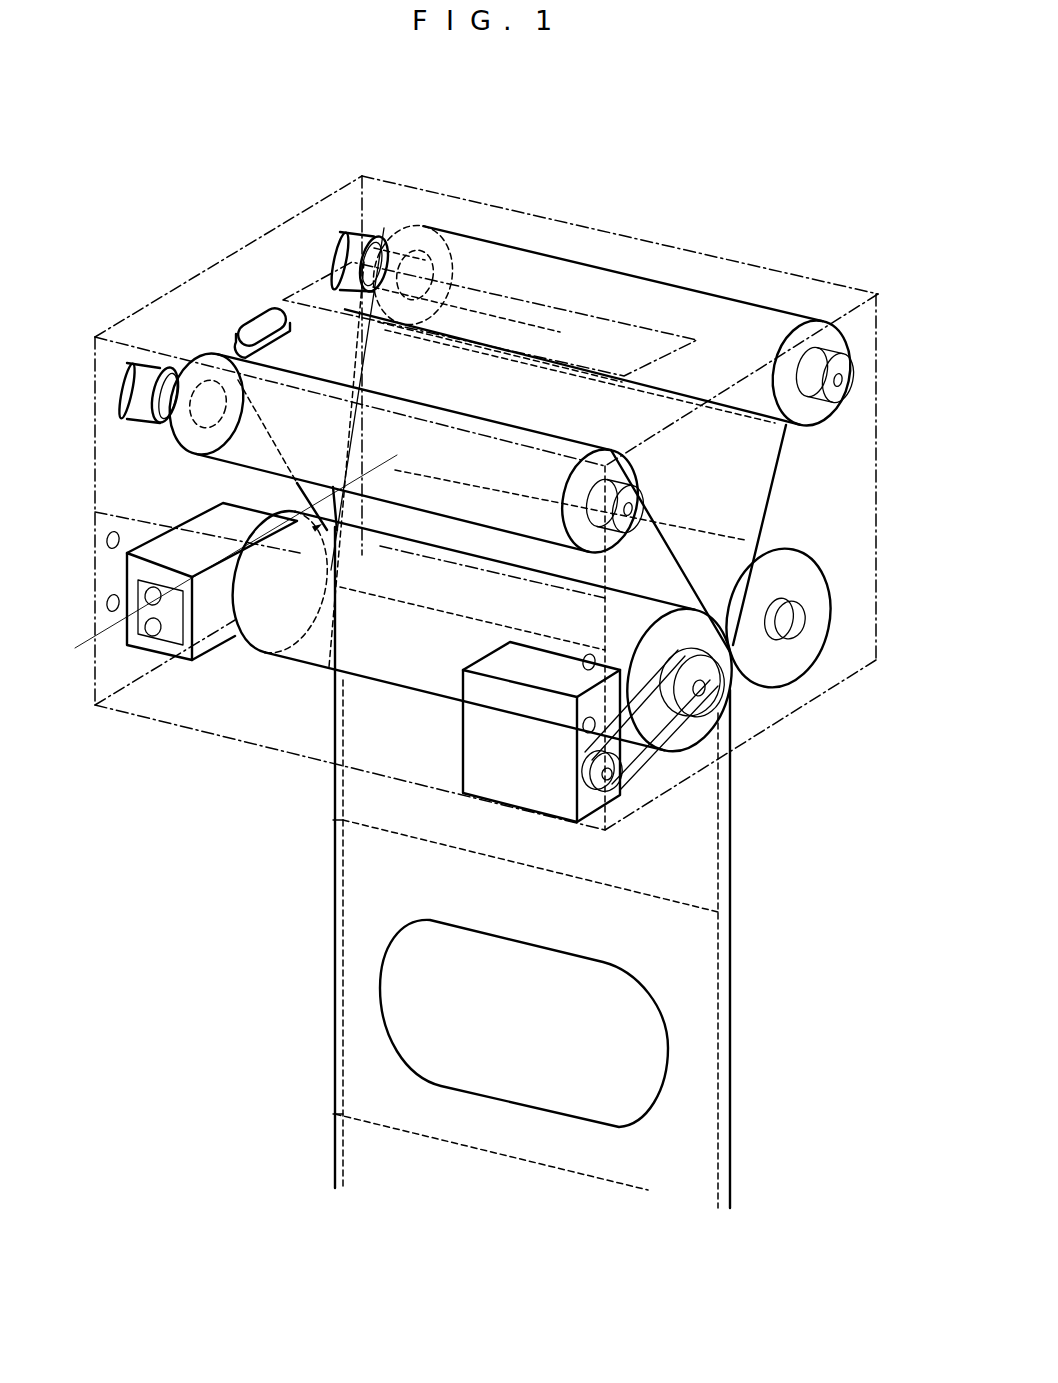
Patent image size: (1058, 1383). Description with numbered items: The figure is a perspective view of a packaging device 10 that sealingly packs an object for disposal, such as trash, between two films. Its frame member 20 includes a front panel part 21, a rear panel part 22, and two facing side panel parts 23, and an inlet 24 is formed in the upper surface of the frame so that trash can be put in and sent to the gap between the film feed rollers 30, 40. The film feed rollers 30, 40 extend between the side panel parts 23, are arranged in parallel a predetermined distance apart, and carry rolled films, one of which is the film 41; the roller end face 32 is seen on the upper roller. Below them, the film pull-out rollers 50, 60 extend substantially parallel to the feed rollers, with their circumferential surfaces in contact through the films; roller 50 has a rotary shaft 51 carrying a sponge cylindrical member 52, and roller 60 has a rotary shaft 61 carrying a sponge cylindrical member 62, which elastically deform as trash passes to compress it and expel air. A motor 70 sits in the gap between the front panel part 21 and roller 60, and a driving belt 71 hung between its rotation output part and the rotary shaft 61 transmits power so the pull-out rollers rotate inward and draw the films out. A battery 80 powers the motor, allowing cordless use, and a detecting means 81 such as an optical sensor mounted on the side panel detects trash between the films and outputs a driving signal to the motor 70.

The packaging device 10 is at (717, 180).
The frame member 20 is at (745, 282).
The front panel part 21 is at (160, 700).
The rear panel part 22 is at (393, 202).
The side panel part 23 is at (160, 340).
The inlet 24 is at (317, 303).
The film feed roller 30 is at (840, 360).
The roller end face 32 is at (743, 353).
The film feed roller 40 is at (128, 390).
The film 41 is at (690, 570).
The film pull-out roller 50 is at (825, 555).
The rotary shaft 51 is at (787, 625).
The cylindrical member 52 is at (760, 540).
The film pull-out roller 60 is at (314, 671).
The rotary shaft 61 is at (713, 693).
The cylindrical member 62 is at (360, 667).
The motor 70 is at (490, 776).
The driving belt 71 is at (640, 760).
The battery 80 is at (127, 630).
The detecting means 81 is at (237, 327).